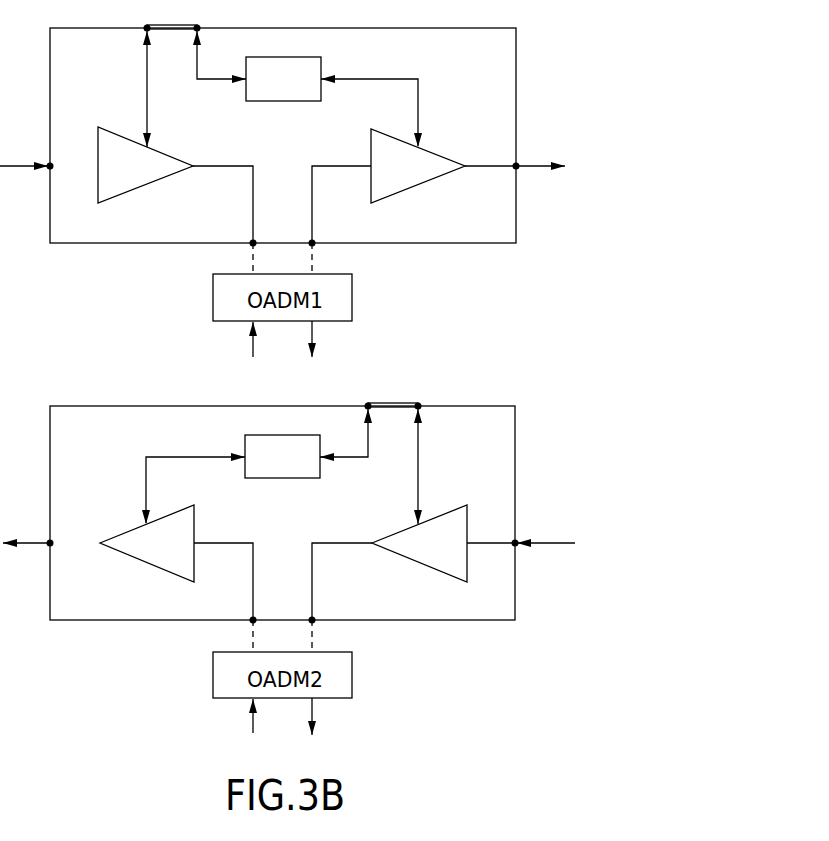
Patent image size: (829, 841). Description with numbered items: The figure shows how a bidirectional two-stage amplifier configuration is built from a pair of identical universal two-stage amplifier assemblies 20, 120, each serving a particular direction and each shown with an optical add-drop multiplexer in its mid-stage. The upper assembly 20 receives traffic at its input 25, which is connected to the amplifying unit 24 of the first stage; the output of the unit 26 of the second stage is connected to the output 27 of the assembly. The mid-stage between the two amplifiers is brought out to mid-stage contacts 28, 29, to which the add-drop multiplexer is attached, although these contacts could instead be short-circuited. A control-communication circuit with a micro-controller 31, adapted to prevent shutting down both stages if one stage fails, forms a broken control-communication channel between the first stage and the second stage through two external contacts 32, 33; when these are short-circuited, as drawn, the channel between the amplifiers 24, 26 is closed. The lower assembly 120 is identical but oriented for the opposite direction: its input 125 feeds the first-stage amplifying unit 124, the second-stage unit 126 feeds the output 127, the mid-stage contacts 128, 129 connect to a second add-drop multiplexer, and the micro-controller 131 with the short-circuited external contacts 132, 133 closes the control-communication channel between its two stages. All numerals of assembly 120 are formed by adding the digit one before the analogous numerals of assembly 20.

The universal two-stage amplifier assembly 20 is at (581, 64).
The amplifying unit of the 1st stage 24 is at (143, 186).
The input 25 is at (42, 154).
The unit of the 2nd stage 26 is at (420, 184).
The output 27 is at (515, 156).
The mid-stage contact 28 is at (225, 220).
The mid-stage contact 29 is at (340, 220).
The micro-controller 31 is at (262, 101).
The external contact 32 is at (152, 86).
The external contact 33 is at (219, 54).
The universal two-stage amplifier assembly 120 is at (581, 441).
The amplifying unit of the 1st stage 124 is at (425, 565).
The input 125 is at (521, 533).
The unit of the 2nd stage 126 is at (147, 562).
The output 127 is at (49, 531).
The mid-stage contact 128 is at (341, 597).
The mid-stage contact 129 is at (225, 597).
The micro-controller 131 is at (262, 478).
The external contact 132 is at (441, 464).
The external contact 133 is at (369, 432).